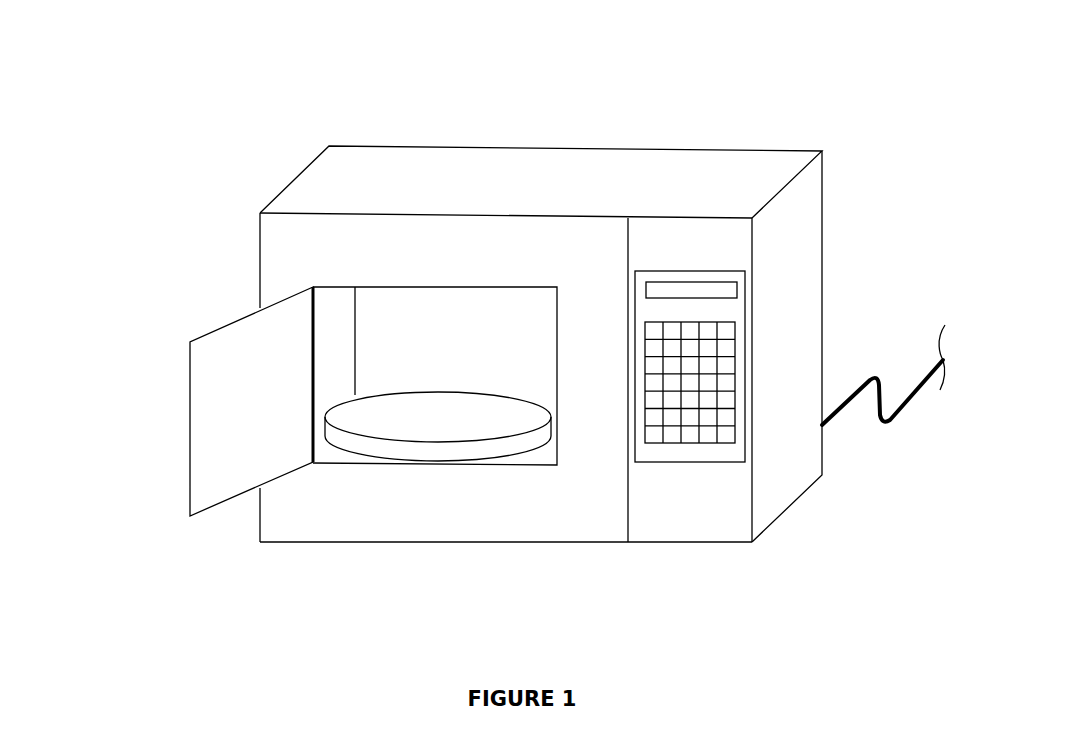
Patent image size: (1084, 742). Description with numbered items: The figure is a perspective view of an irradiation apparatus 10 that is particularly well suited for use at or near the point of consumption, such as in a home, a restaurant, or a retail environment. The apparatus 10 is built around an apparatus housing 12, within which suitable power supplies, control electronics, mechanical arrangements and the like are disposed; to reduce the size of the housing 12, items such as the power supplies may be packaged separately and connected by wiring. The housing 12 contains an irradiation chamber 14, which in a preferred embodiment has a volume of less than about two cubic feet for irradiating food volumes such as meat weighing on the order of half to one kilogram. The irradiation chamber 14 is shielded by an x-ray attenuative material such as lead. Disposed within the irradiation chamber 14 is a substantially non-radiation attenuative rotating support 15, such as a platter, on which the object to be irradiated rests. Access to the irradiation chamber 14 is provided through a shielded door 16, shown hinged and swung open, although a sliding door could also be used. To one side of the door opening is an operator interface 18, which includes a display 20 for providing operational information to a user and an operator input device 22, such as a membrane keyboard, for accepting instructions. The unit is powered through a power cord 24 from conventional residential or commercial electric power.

The irradiation apparatus 10 is at (598, 129).
The apparatus housing 12 is at (303, 170).
The irradiation chamber 14 is at (529, 363).
The rotating support 15 is at (437, 447).
The shielded door 16 is at (190, 357).
The operator interface 18 is at (727, 270).
The display 20 is at (737, 292).
The operator input device 22 is at (670, 458).
The power cord 24 is at (897, 425).